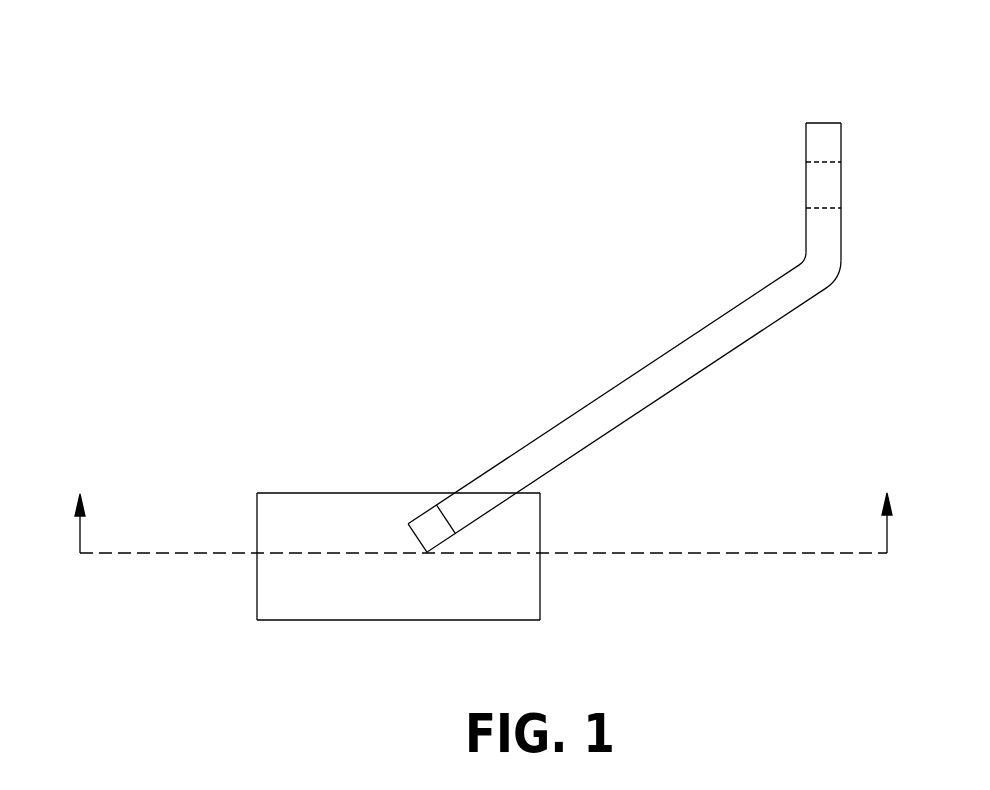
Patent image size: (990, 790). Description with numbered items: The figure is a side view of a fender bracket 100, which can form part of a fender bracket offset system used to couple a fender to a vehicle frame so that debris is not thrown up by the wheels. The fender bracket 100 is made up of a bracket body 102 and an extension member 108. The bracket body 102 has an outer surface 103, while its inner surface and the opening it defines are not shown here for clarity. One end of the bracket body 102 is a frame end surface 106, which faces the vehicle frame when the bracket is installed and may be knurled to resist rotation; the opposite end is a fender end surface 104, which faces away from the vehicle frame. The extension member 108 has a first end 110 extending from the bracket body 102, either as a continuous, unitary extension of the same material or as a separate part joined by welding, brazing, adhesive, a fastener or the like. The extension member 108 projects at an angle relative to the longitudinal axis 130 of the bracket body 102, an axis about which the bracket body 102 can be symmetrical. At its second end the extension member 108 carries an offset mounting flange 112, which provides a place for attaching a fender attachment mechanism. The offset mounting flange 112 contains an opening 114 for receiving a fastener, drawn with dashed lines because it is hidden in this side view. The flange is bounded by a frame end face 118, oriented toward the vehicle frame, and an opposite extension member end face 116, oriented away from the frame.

The fender bracket 100 is at (327, 178).
The bracket body 102 is at (397, 556).
The outer surface 103 is at (292, 500).
The fender end surface 104 is at (540, 595).
The frame end surface 106 is at (257, 595).
The extension member 108 is at (670, 283).
The first end 110 is at (417, 500).
The offset mounting flange 112 is at (815, 126).
The opening 114 is at (848, 162).
The extension member end face 116 is at (841, 228).
The frame end face 118 is at (806, 228).
The longitudinal axis 130 is at (715, 556).